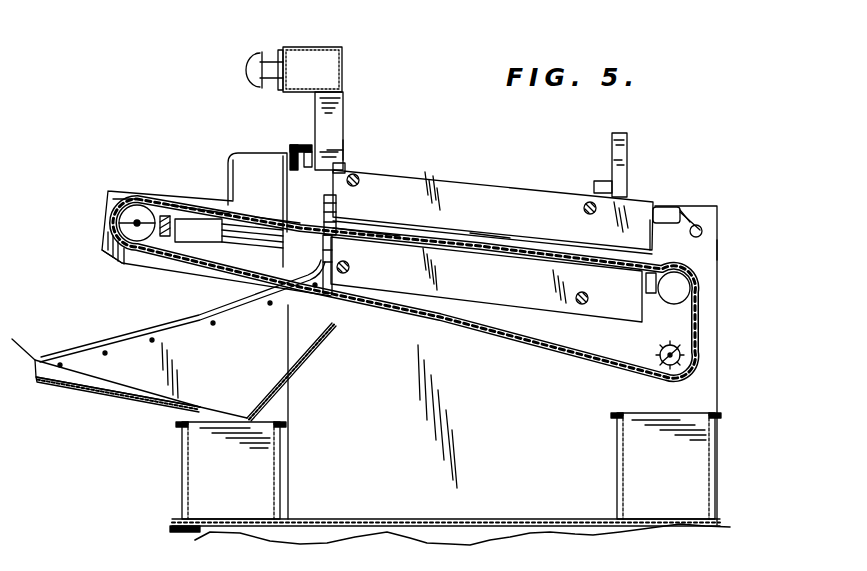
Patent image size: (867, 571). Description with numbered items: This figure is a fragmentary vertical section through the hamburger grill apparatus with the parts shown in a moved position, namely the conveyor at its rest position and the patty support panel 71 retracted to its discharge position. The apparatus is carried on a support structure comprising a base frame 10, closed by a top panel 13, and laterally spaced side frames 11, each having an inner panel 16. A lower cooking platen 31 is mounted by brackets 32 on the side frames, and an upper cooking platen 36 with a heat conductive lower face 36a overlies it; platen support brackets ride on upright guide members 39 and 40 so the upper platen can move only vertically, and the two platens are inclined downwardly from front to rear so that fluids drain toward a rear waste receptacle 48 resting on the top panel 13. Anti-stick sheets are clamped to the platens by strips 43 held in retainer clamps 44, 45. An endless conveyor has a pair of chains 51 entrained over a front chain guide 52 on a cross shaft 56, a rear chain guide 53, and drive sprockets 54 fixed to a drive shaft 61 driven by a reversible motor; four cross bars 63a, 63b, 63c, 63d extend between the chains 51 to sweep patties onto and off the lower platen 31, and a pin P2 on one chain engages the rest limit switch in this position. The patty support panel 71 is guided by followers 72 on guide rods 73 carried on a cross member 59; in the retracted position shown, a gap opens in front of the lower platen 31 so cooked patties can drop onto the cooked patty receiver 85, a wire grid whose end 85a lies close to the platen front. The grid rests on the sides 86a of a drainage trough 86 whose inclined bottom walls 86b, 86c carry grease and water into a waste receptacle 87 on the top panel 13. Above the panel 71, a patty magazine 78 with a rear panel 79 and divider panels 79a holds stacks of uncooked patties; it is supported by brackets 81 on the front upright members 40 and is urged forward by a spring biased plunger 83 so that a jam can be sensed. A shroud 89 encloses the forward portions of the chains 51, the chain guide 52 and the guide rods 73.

The base frame 10 is at (190, 537).
The side frames 11 is at (720, 254).
The top panel 13 is at (372, 519).
The inner panel 16 is at (698, 396).
The lower cooking platen 31 is at (496, 288).
The brackets 32 is at (583, 305).
The upper cooking platen 36 is at (450, 186).
The lower face 36a is at (413, 233).
The upright guide member 39 is at (343, 148).
The upright guide member 40 is at (627, 158).
The strips 43 is at (654, 247).
The retainer clamp 44 is at (656, 250).
The retainer clamp 45 is at (648, 198).
The rear waste receptacle 48 is at (617, 460).
The chains 51 is at (540, 245).
The front chain guide 52 is at (138, 205).
The rear chain guide 53 is at (690, 283).
The drive sprockets 54 is at (685, 355).
The cross shaft 56 is at (119, 223).
The cross member 59 is at (135, 248).
The drive shaft 61 is at (666, 359).
The cross bar 63a is at (338, 228).
The cross bar 63b is at (268, 222).
The cross bar 63c is at (195, 205).
The cross bar 63d is at (118, 190).
The patty support panel 71 is at (235, 190).
The followers 72 is at (190, 233).
The guide rods 73 is at (246, 237).
The patty magazine 78 is at (261, 150).
The rear panel 79 is at (313, 167).
The divider panels 79a is at (266, 162).
The brackets 81 is at (327, 153).
The spring biased plunger 83 is at (307, 177).
The cooked patty receiver 85 is at (190, 328).
The end of cooked patty receiver 85a is at (332, 295).
The drainage trough 86 is at (84, 395).
The sides of drainage trough 86a is at (158, 388).
The bottom wall 86b is at (118, 397).
The bottom wall 86c is at (293, 368).
The waste receptacle 87 is at (278, 462).
The shroud 89 is at (163, 190).
The pin P2 is at (490, 242).